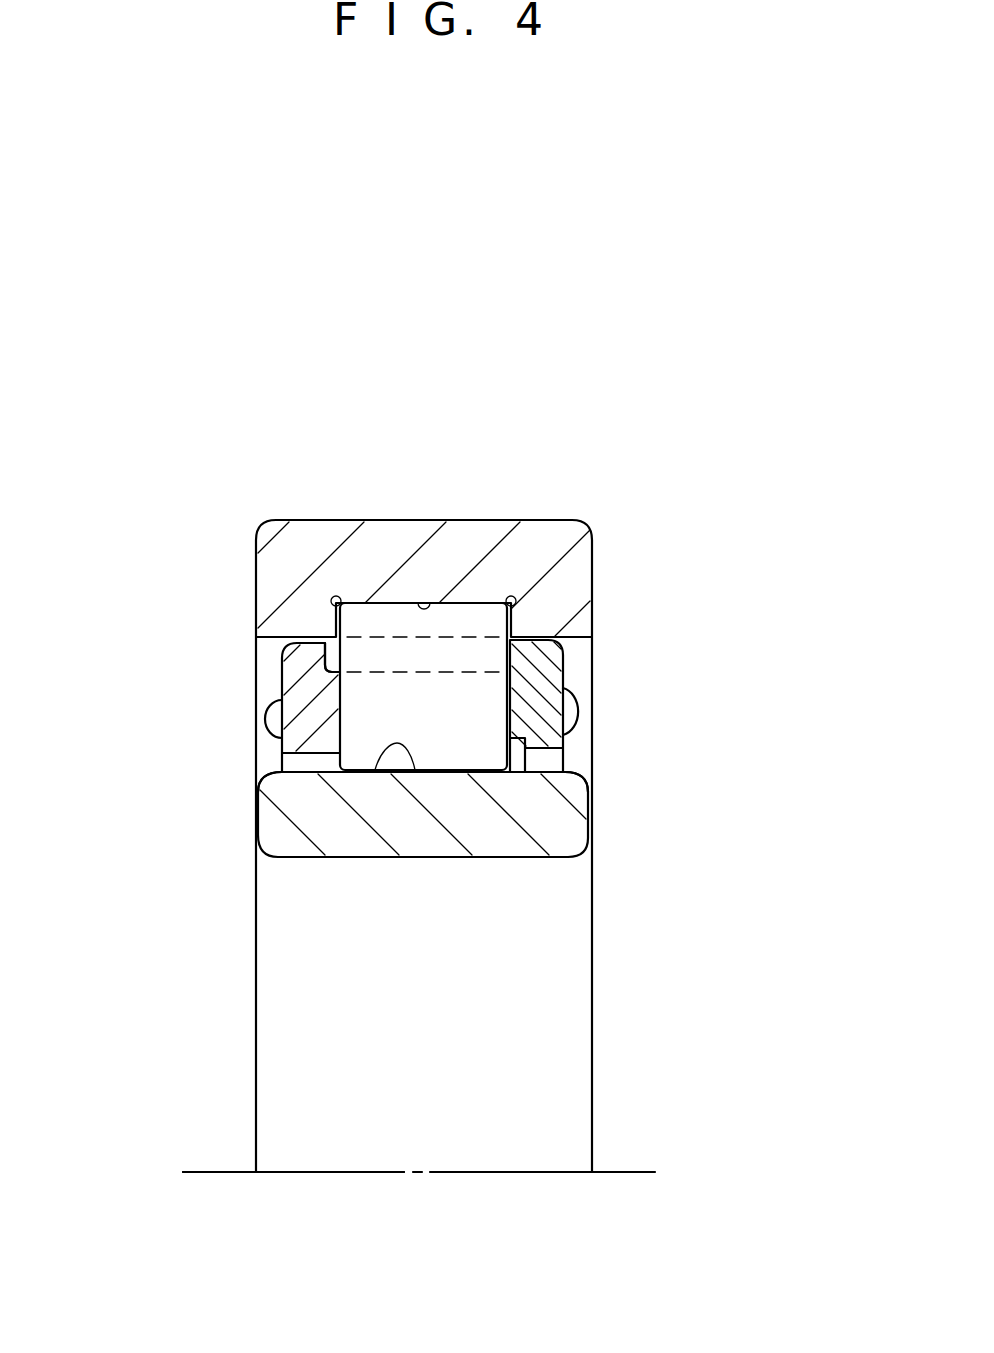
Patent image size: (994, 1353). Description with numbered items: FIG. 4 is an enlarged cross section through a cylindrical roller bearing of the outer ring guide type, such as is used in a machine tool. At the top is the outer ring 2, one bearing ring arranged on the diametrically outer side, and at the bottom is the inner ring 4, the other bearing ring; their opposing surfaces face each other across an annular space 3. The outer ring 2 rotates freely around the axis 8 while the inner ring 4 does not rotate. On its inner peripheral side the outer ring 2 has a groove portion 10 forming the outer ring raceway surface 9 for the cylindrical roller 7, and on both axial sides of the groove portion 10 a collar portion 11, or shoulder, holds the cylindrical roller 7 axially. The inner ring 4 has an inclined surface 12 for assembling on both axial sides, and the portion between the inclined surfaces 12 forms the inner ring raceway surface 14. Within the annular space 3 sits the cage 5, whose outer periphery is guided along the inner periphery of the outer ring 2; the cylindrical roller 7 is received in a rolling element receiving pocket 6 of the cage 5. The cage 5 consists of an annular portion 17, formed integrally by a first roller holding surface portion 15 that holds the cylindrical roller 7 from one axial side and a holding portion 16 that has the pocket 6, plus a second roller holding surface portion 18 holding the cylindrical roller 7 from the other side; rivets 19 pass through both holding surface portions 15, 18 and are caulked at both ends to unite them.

The outer ring 2 is at (533, 528).
The annular space 3 is at (580, 740).
The inner ring 4 is at (592, 918).
The cage 5 is at (398, 693).
The rolling element receiving pocket 6 is at (459, 740).
The cylindrical roller 7 is at (467, 612).
The axis 8 is at (207, 1175).
The outer ring raceway surface 9 is at (424, 600).
The groove portion 10 is at (378, 618).
The collar portion 11 is at (327, 622).
The inclined surface 12 is at (262, 772).
The inner ring raceway surface 14 is at (378, 762).
The first roller holding surface portion 15 is at (298, 688).
The holding portion 16 is at (287, 694).
The annular portion 17 is at (196, 693).
The second roller holding surface portion 18 is at (520, 671).
The rivet 19 is at (262, 725).